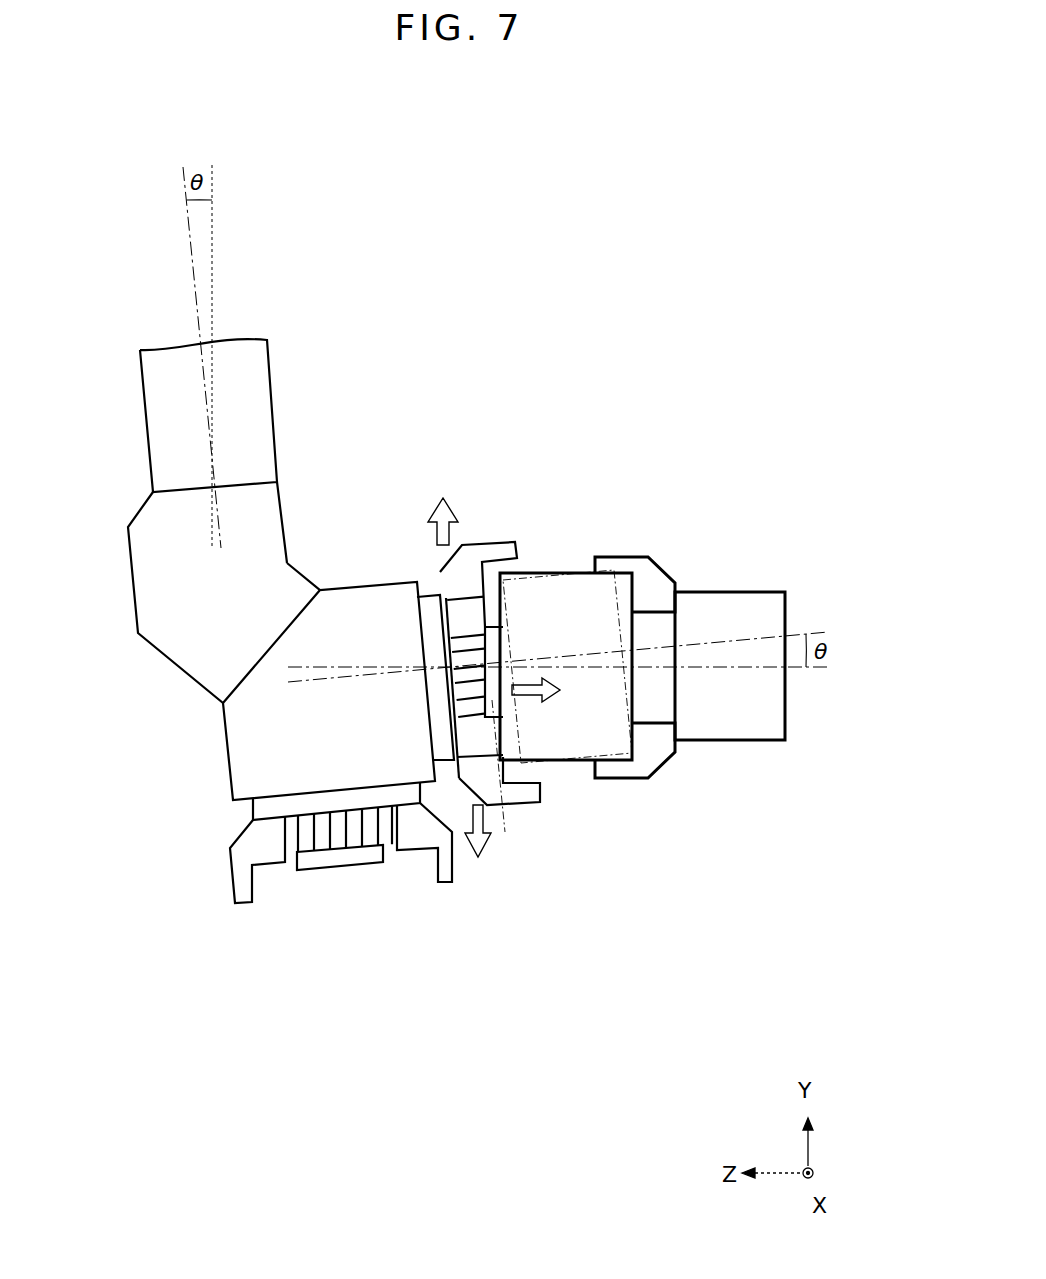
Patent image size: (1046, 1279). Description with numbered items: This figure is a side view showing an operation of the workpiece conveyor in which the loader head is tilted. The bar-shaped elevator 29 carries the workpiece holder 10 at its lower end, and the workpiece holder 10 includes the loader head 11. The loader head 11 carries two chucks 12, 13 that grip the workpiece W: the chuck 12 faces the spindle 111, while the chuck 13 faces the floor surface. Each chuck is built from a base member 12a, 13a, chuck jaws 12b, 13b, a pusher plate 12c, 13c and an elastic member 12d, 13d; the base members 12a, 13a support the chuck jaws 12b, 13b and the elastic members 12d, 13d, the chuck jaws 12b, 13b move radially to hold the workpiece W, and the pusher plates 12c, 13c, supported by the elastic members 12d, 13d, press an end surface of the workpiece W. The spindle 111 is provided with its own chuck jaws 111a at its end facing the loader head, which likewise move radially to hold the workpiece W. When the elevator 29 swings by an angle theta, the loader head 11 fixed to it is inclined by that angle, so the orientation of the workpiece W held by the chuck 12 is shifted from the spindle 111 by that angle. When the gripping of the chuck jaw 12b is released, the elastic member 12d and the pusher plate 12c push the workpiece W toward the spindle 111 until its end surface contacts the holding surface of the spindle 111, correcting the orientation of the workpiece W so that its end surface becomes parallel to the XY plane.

The workpiece holder 10 is at (181, 983).
The loader head 11 is at (243, 727).
The chuck 12 is at (480, 690).
The base member 12a is at (428, 607).
The chuck jaw 12b is at (497, 543).
The pusher plate 12c is at (488, 705).
The elastic member 12d is at (462, 640).
The chuck 13 is at (306, 879).
The base member 13a is at (253, 815).
The chuck jaw 13b is at (240, 882).
The pusher plate 13c is at (312, 870).
The elastic member 13d is at (372, 840).
The elevator 29 is at (260, 401).
The workpiece W is at (545, 583).
The spindle 111 is at (690, 629).
The chuck jaw 111a is at (636, 568).